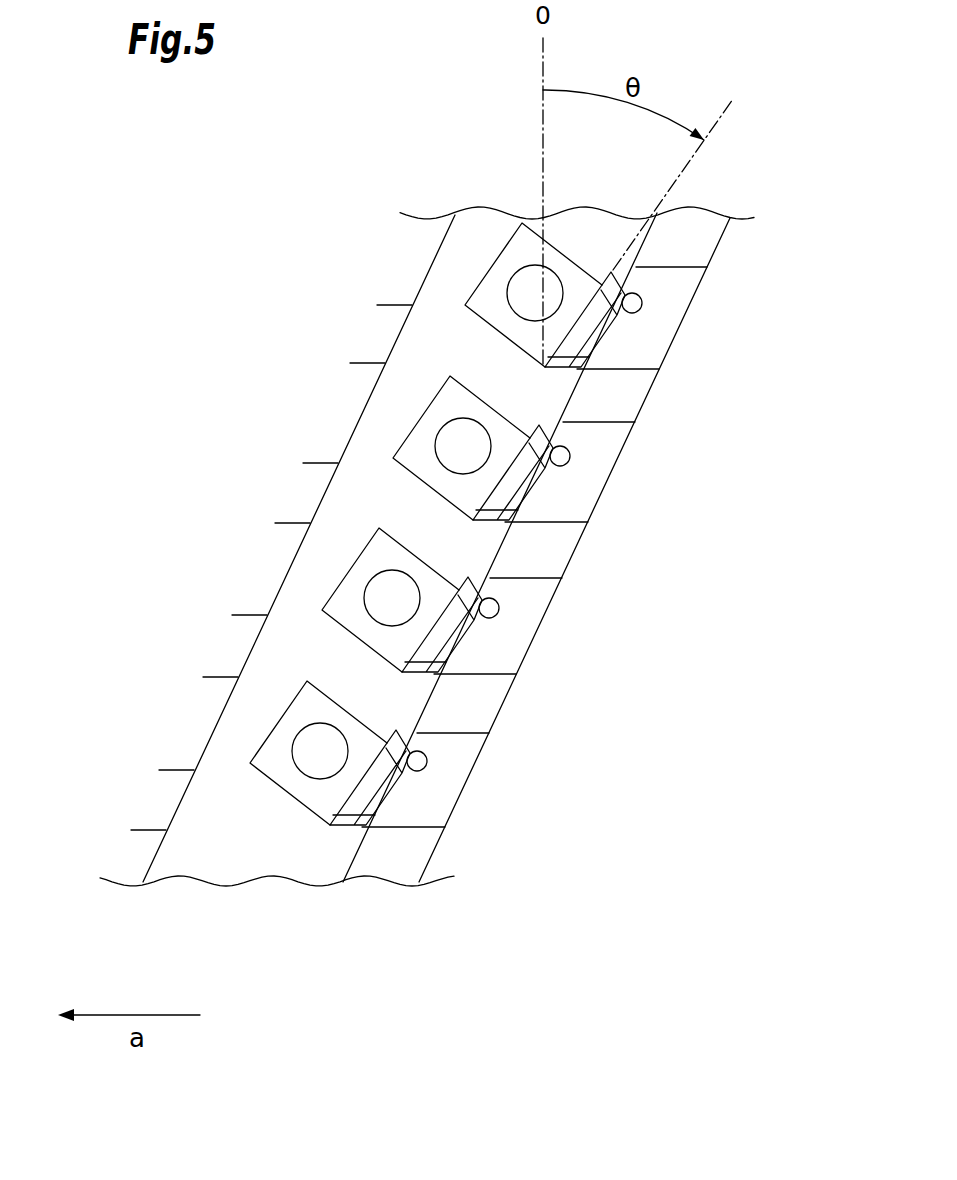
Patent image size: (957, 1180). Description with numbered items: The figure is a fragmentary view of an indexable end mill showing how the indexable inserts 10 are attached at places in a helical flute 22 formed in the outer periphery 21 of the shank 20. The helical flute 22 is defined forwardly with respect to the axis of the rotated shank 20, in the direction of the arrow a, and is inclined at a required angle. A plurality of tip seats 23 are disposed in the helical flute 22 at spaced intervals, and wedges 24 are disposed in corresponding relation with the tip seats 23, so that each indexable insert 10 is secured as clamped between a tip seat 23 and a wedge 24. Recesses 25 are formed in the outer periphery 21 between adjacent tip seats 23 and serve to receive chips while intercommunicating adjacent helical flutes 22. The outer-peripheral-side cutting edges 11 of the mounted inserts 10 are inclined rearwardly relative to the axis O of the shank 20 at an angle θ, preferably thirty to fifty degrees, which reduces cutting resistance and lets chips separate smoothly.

The indexable insert 10 is at (589, 329).
The outer-peripheral-side cutting edge 11 is at (567, 335).
The shank 20 is at (371, 881).
The outer periphery 21 is at (237, 885).
The helical flute 22 is at (200, 808).
The tip seat 23 is at (595, 352).
The wedge 24 is at (493, 277).
The recess 25 is at (717, 230).